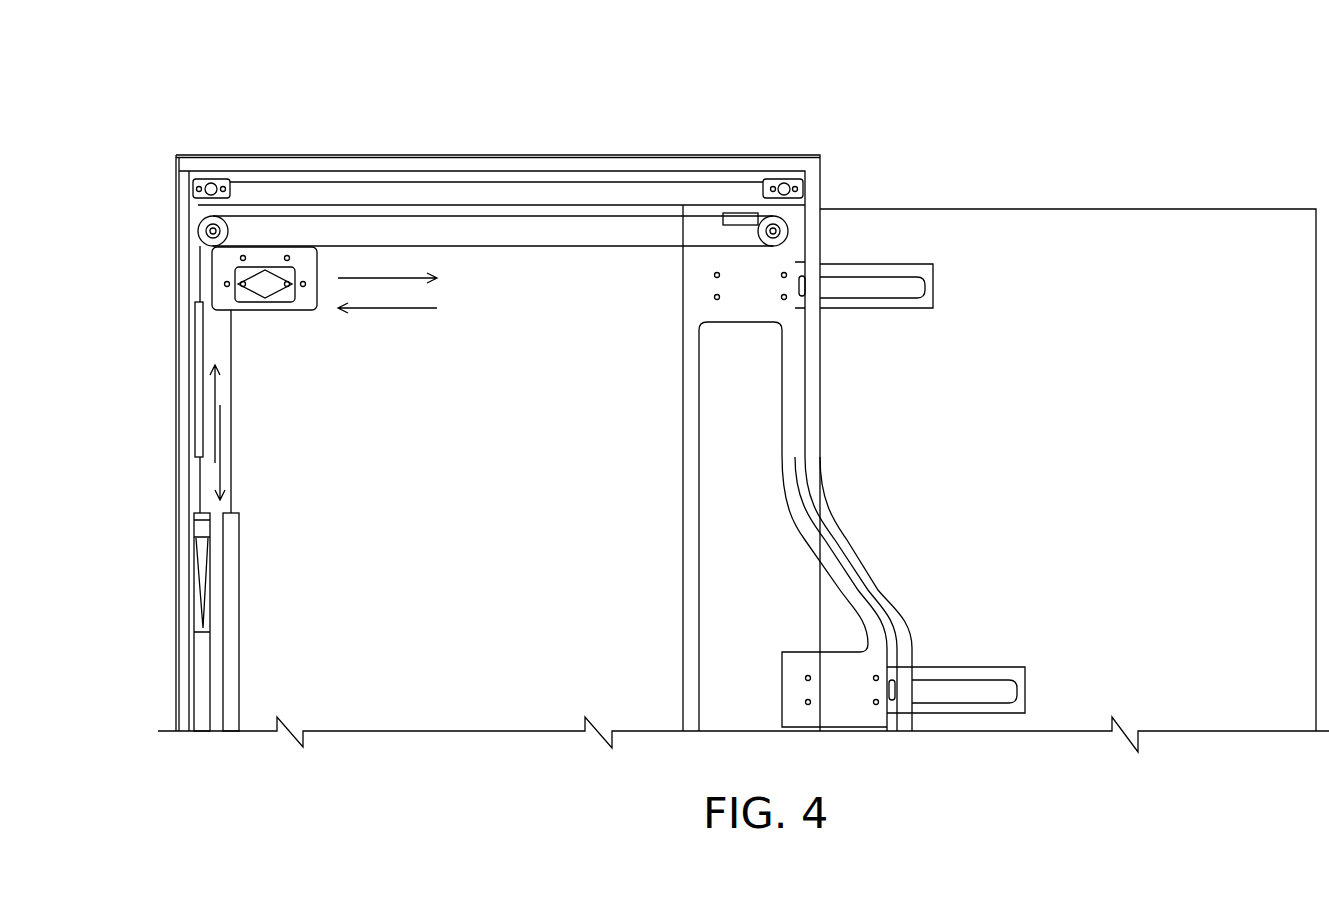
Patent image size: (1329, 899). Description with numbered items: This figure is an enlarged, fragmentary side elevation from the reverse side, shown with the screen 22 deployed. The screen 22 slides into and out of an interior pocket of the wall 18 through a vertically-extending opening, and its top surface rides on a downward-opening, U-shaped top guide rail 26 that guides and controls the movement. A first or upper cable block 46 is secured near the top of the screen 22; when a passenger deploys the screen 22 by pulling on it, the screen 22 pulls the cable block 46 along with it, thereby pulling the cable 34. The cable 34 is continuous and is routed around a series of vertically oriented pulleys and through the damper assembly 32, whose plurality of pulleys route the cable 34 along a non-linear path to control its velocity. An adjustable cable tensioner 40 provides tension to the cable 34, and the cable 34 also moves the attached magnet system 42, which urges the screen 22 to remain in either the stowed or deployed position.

The wall 18 is at (453, 675).
The screen 22 is at (1160, 223).
The top guide rail 26 is at (562, 197).
The damper assembly 32 is at (265, 250).
The cable 34 is at (428, 215).
The adjustable cable tensioner 40 is at (232, 613).
The magnet system 42 is at (200, 447).
The first cable block 46 is at (738, 220).